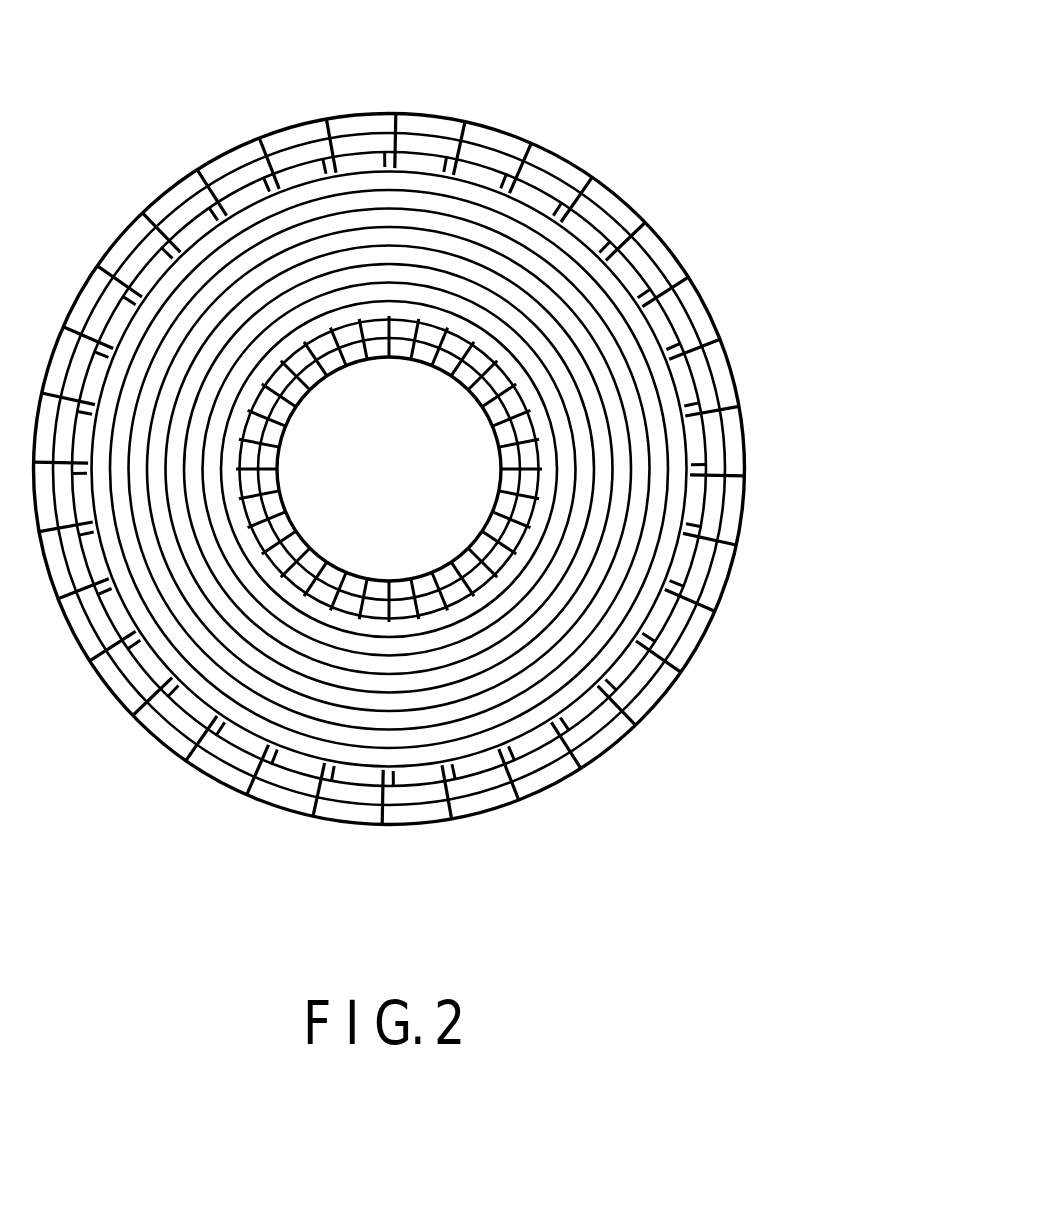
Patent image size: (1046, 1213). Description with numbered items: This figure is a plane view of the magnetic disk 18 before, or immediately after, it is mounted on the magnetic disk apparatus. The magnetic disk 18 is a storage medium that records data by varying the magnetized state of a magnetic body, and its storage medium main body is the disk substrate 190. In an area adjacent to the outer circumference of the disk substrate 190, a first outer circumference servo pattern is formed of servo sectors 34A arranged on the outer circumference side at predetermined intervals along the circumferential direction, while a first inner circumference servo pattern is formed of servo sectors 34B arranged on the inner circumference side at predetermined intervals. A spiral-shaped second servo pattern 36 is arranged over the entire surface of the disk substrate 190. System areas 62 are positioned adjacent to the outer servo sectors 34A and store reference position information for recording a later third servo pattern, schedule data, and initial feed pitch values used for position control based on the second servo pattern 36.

The magnetic disk 18 is at (447, 426).
The disk substrate 190 is at (745, 433).
The second servo pattern 36 is at (680, 312).
The servo sectors 34A is at (663, 668).
The servo sectors 34B is at (488, 562).
The system areas 62 is at (645, 636).